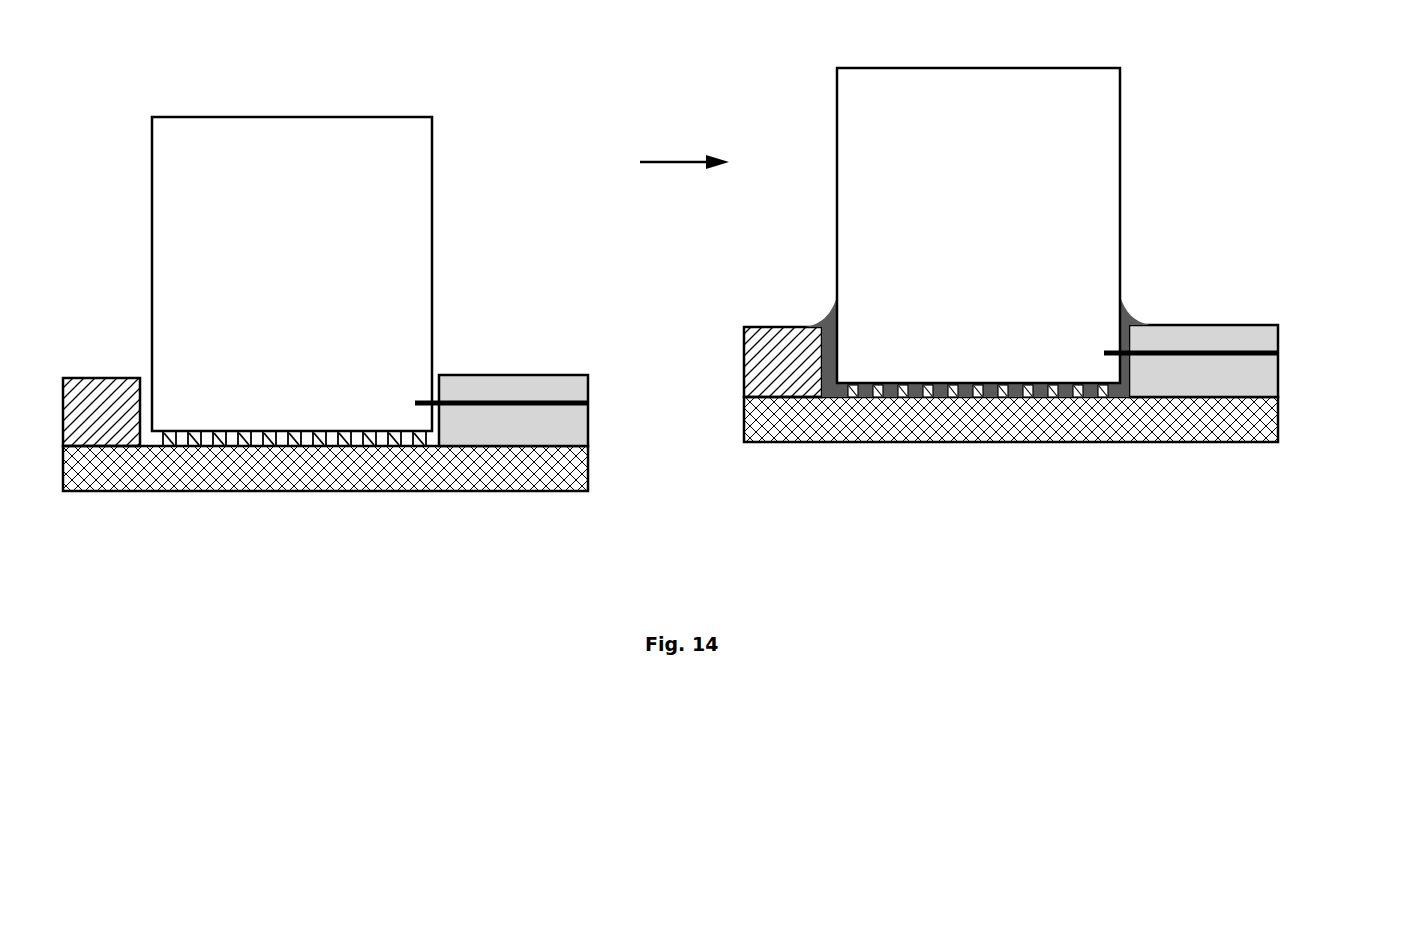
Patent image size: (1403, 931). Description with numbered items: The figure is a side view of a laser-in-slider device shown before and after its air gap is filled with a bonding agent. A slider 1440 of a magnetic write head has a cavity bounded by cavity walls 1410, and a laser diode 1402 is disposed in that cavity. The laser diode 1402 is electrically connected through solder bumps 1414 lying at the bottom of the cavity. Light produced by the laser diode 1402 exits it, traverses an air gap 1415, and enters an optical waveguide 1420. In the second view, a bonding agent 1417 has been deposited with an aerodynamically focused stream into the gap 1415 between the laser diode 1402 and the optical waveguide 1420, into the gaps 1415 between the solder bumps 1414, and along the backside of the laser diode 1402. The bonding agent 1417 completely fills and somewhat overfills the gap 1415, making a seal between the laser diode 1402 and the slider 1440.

The laser diode 1402 is at (401, 152).
The cavity walls 1410 is at (113, 383).
The solder bumps 1414 is at (1060, 392).
The air gap 1415 is at (288, 440).
The bonding agent 1417 is at (950, 390).
The optical waveguide 1420 is at (589, 403).
The slider 1440 is at (589, 465).